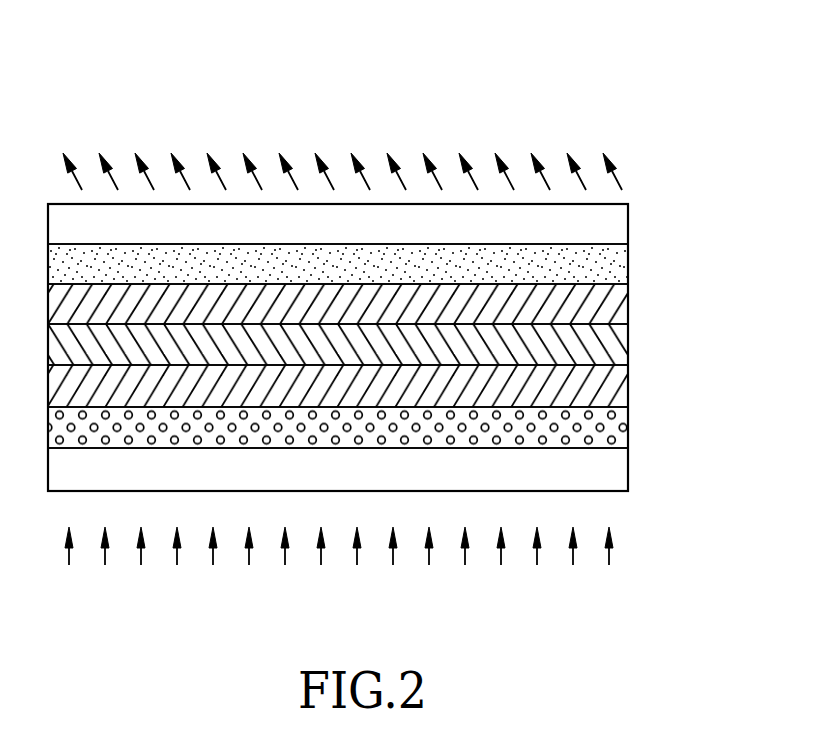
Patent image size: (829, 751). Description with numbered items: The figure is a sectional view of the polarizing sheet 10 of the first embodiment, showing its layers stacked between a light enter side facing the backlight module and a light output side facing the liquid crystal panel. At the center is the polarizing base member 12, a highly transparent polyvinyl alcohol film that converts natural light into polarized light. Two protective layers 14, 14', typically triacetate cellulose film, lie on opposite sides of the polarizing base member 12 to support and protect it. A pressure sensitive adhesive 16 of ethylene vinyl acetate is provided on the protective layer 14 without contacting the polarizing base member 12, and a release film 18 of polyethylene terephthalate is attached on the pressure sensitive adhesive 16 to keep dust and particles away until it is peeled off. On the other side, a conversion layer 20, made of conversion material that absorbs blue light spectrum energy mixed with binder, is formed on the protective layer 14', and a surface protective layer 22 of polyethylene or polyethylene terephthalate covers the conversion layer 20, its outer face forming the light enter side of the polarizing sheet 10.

The polarizing sheet 10 is at (634, 116).
The release film 18 is at (617, 220).
The pressure sensitive adhesive 16 is at (620, 260).
The protective layer 14 is at (384, 299).
The polarizing base member 12 is at (615, 353).
The protective layer 14' is at (389, 386).
The conversion layer 20 is at (617, 429).
The surface protective layer 22 is at (617, 470).